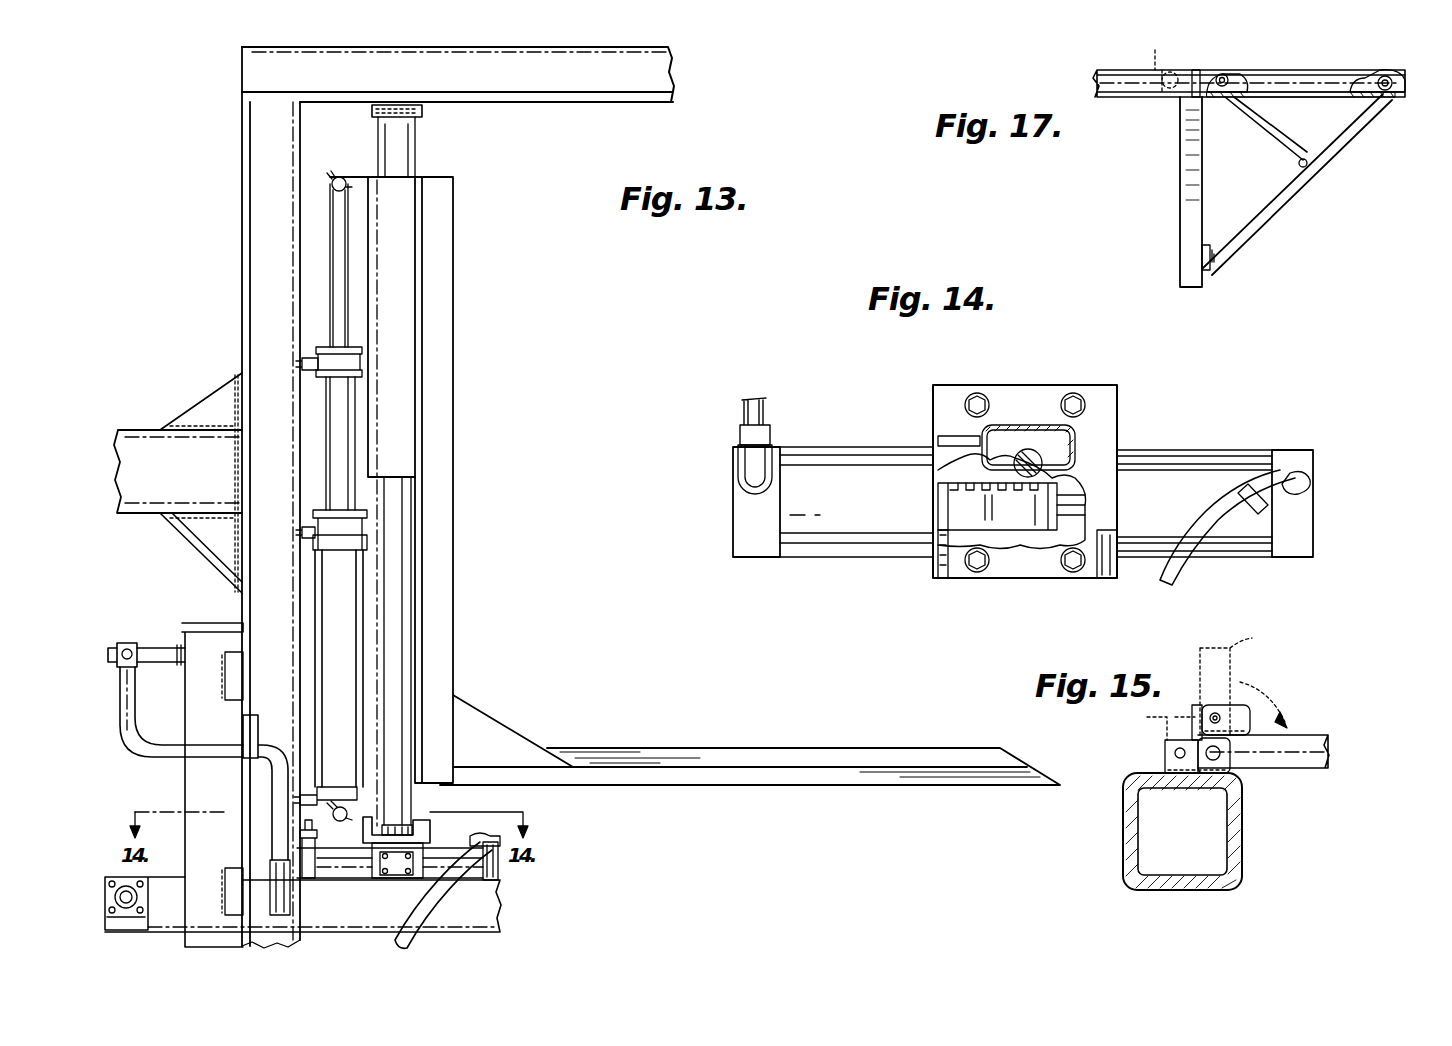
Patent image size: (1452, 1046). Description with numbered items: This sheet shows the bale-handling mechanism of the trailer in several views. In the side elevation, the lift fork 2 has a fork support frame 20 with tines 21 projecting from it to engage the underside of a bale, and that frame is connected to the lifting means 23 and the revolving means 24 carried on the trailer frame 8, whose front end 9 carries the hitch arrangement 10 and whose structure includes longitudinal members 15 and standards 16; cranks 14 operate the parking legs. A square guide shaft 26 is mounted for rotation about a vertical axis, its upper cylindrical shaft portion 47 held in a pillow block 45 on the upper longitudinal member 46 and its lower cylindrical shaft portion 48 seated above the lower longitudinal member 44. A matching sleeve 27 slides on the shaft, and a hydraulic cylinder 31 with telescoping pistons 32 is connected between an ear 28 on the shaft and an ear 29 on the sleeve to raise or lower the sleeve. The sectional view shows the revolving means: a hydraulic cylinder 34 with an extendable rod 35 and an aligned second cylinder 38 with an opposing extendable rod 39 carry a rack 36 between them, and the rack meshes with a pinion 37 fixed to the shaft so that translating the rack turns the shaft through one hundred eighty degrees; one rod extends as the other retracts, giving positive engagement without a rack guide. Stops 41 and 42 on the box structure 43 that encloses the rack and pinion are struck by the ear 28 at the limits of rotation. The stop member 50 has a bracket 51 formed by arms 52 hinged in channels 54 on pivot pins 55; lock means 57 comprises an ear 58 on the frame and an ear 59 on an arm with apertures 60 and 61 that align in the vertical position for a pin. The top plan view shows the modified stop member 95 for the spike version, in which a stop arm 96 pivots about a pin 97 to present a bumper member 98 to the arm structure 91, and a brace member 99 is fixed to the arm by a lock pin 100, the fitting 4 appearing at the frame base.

In FIG. 13, the lift fork 2 is at (918, 750).
In FIG. 13, the hydraulic fitting 4 is at (115, 872).
In FIG. 13, the trailer frame 8 is at (592, 92).
In FIG. 13, the front end 9 is at (240, 78).
In FIG. 13, the hitch arrangement 10 is at (146, 445).
In FIG. 13, the cranks 14 is at (154, 748).
In FIG. 13, the longitudinal members 15 is at (661, 100).
In FIG. 13, the standards 16 is at (248, 182).
In FIG. 13, the fork support frame 20 is at (453, 262).
In FIG. 13, the tines 21 is at (1000, 766).
In FIG. 13, the lifting means 23 is at (308, 616).
In FIG. 13, the revolving means 24 is at (357, 872).
In FIG. 14, the revolving means 24 is at (1020, 545).
In FIG. 13, the guide shaft 26 is at (403, 560).
In FIG. 14, the guide shaft 26 is at (1068, 462).
In FIG. 13, the sleeve 27 is at (411, 356).
In FIG. 13, the ear 28 is at (343, 806).
In FIG. 14, the ear 28 is at (945, 437).
In FIG. 13, the ear 29 is at (352, 188).
In FIG. 13, the hydraulic cylinder 31 is at (316, 670).
In FIG. 13, the telescoping pistons 32 is at (335, 305).
In FIG. 13, the hydraulic cylinder 34 is at (494, 876).
In FIG. 14, the hydraulic cylinder 34 is at (1212, 480).
In FIG. 14, the extendable rod 35 is at (1062, 510).
In FIG. 14, the rack 36 is at (965, 510).
In FIG. 14, the pinion 37 is at (998, 472).
In FIG. 13, the second cylinder 38 is at (320, 880).
In FIG. 14, the second cylinder 38 is at (812, 525).
In FIG. 14, the extendable rod 39 is at (942, 506).
In FIG. 13, the stop 41 is at (364, 838).
In FIG. 14, the stop 41 is at (945, 578).
In FIG. 13, the stop 42 is at (426, 838).
In FIG. 14, the stop 42 is at (1105, 580).
In FIG. 13, the box structure 43 is at (421, 882).
In FIG. 13, the lower longitudinal member 44 is at (462, 930).
In FIG. 17, the lower longitudinal member 44 is at (1316, 78).
In FIG. 15, the lower longitudinal member 44 is at (1244, 844).
In FIG. 13, the pillow block 45 is at (423, 110).
In FIG. 17, the pillow block 45 is at (1195, 68).
In FIG. 13, the upper longitudinal member 46 is at (500, 100).
In FIG. 17, the upper longitudinal member 46 is at (1122, 78).
In FIG. 13, the upper cylindrical shaft portion 47 is at (388, 126).
In FIG. 17, the upper cylindrical shaft portion 47 is at (1158, 52).
In FIG. 13, the cylindrical shaft portion 48 is at (392, 828).
In FIG. 14, the cylindrical shaft portion 48 is at (1030, 448).
In FIG. 15, the stop member 50 is at (1300, 772).
In FIG. 15, the bracket 51 is at (1322, 768).
In FIG. 15, the arms 52 is at (1300, 745).
In FIG. 15, the channels 54 is at (1210, 768).
In FIG. 15, the pivot pins 55 is at (1230, 753).
In FIG. 15, the lock means 57 is at (1188, 725).
In FIG. 15, the ear 58 is at (1165, 758).
In FIG. 15, the ear 59 is at (1255, 720).
In FIG. 15, the aperture 60 is at (1176, 752).
In FIG. 15, the aperture 61 is at (1217, 713).
In FIG. 17, the arm structure 91 is at (1182, 152).
In FIG. 17, the modified stop member 95 is at (1292, 198).
In FIG. 17, the stop arm 96 is at (1258, 226).
In FIG. 17, the pin 97 is at (1370, 72).
In FIG. 17, the bumper member 98 is at (1206, 278).
In FIG. 17, the brace member 99 is at (1264, 126).
In FIG. 17, the lock pin 100 is at (1308, 166).